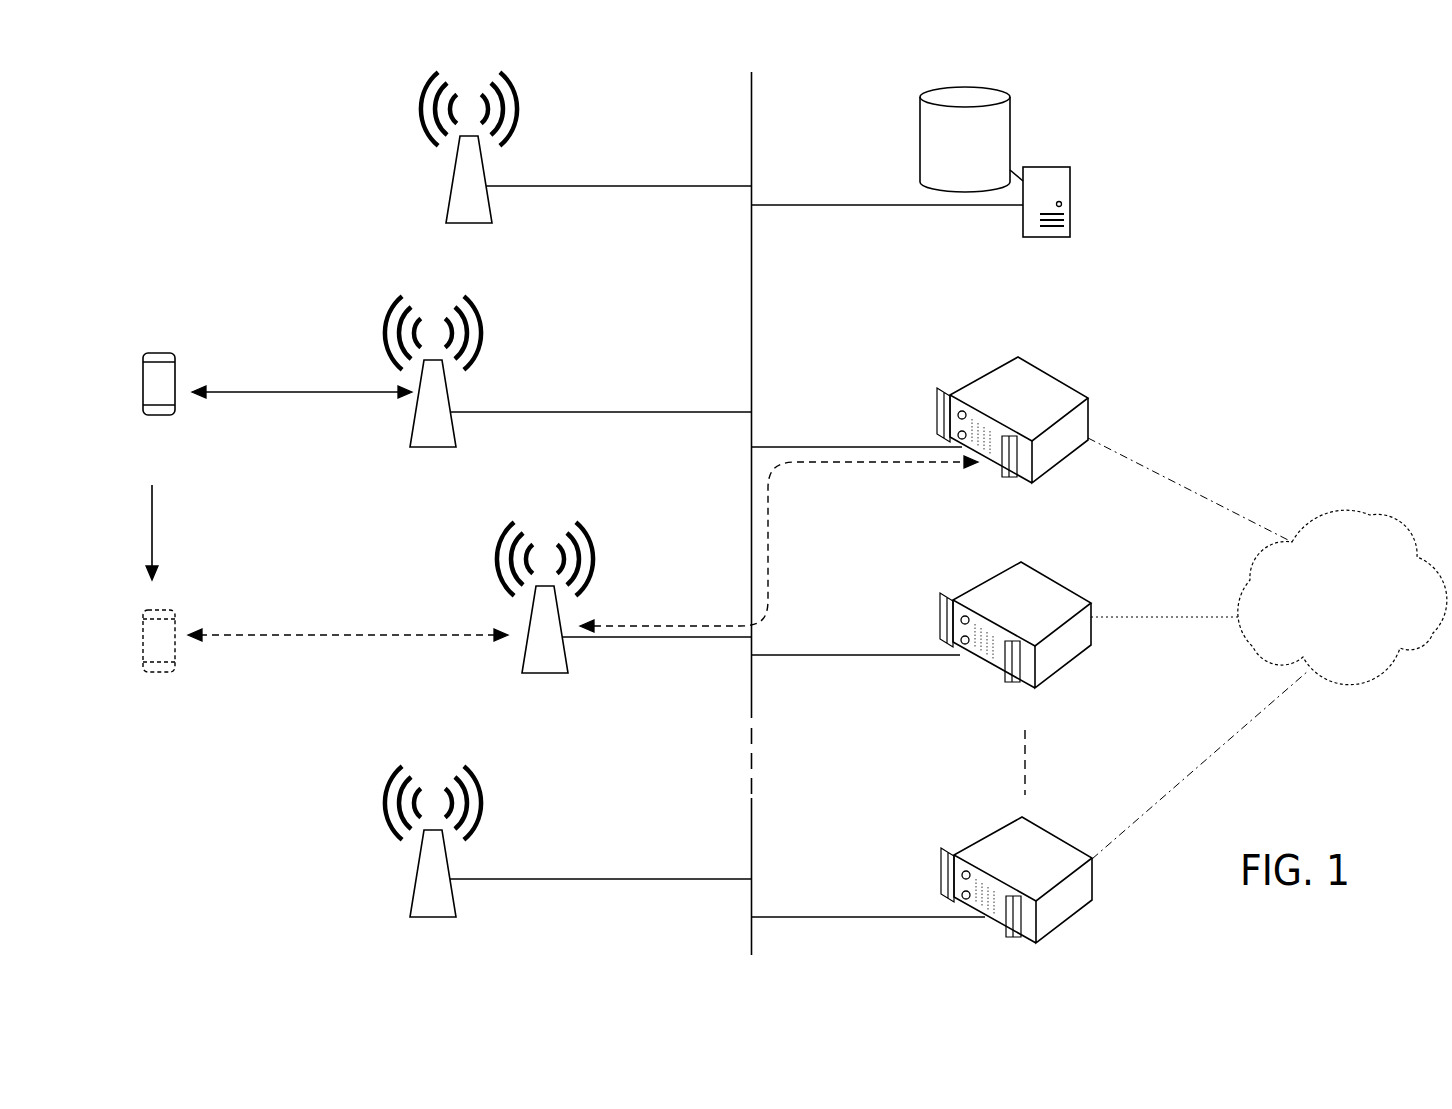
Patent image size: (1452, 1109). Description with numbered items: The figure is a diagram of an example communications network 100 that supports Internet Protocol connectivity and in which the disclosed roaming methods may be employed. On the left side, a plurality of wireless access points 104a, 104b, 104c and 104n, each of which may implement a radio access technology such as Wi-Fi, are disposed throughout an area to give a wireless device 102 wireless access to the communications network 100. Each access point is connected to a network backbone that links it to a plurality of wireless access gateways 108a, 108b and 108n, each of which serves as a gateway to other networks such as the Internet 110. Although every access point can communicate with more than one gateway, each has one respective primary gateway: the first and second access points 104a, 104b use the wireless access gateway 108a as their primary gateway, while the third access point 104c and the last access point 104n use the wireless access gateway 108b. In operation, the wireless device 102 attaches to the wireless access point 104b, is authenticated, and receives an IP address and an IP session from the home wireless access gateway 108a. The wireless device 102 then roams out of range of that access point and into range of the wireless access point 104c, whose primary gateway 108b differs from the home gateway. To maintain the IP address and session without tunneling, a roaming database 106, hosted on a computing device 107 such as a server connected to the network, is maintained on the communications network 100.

The communications network 100 is at (1398, 126).
The wireless device 102 is at (155, 352).
The wireless access point 104a is at (452, 185).
The wireless access point 104b is at (410, 434).
The wireless access point 104c is at (527, 628).
The wireless access point 104n is at (415, 893).
The roaming database 106 is at (918, 138).
The computing device 107 is at (1070, 167).
The wireless access gateway 108a is at (1012, 357).
The wireless access gateway 108b is at (1007, 563).
The wireless access gateway 108n is at (1008, 818).
The Internet 110 is at (1362, 512).